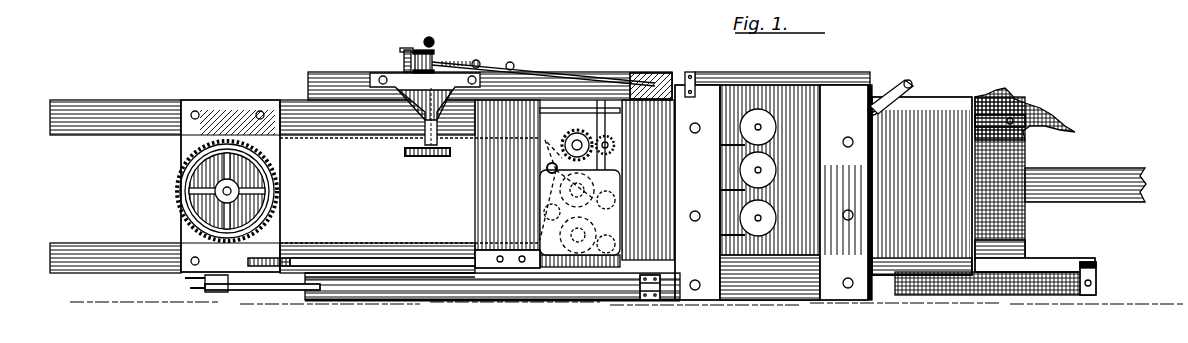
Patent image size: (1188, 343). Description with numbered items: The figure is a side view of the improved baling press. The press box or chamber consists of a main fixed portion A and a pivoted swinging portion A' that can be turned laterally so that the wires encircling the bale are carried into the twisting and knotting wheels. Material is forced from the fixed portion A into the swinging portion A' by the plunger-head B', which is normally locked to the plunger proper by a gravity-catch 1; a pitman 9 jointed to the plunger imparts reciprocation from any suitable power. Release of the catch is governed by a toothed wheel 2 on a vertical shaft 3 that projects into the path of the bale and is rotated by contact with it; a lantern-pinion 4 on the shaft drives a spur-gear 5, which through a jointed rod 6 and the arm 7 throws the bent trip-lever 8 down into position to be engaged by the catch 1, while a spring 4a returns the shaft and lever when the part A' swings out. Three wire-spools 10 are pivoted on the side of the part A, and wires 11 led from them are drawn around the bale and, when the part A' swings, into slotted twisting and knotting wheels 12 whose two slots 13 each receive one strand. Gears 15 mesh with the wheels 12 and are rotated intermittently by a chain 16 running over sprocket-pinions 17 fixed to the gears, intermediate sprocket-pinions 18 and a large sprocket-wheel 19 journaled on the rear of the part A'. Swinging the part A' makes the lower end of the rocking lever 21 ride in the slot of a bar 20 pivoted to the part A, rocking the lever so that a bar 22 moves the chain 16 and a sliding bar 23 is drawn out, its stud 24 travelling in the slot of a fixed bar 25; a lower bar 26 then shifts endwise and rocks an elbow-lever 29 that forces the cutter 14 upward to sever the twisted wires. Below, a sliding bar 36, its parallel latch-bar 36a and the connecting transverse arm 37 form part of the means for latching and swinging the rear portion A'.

The gravity-catch 1 is at (1032, 118).
The toothed wheel 2 is at (420, 157).
The vertical shaft 3 is at (410, 82).
The lantern-pinion 4 is at (432, 60).
The spring 4a is at (412, 48).
The spur-gear 5 is at (485, 62).
The jointed rod 6 is at (578, 71).
The arm of trip-lever 7 is at (913, 88).
The trip-lever 8 is at (870, 104).
The pitman 9 is at (1100, 168).
The wire-spools 10 is at (770, 205).
The wires 11 is at (697, 182).
The twisting and knotting wheels 12 is at (614, 142).
The slots 13 is at (563, 140).
The cutter 14 is at (612, 120).
The gears 15 is at (548, 200).
The chain 16 is at (366, 140).
The sprocket-pinions 17 is at (558, 150).
The intermediate sprocket-pinions 18 is at (548, 172).
The sprocket-wheel 19 is at (276, 191).
The bar 20 is at (298, 290).
The rocking lever 21 is at (245, 292).
The bar 22 is at (296, 258).
The sliding bar 23 is at (345, 277).
The stud 24 is at (545, 283).
The fixed slotted bar 25 is at (492, 270).
The bar 26 is at (405, 285).
The elbow-lever 29 is at (605, 270).
The sliding bar 36 is at (1045, 296).
The latch-bar 36a is at (1080, 254).
The transverse rigid arm 37 is at (1096, 266).
The fixed portion of press-box A is at (723, 171).
The swinging portion of press-box A' is at (165, 173).
The plunger-head B' is at (1017, 178).